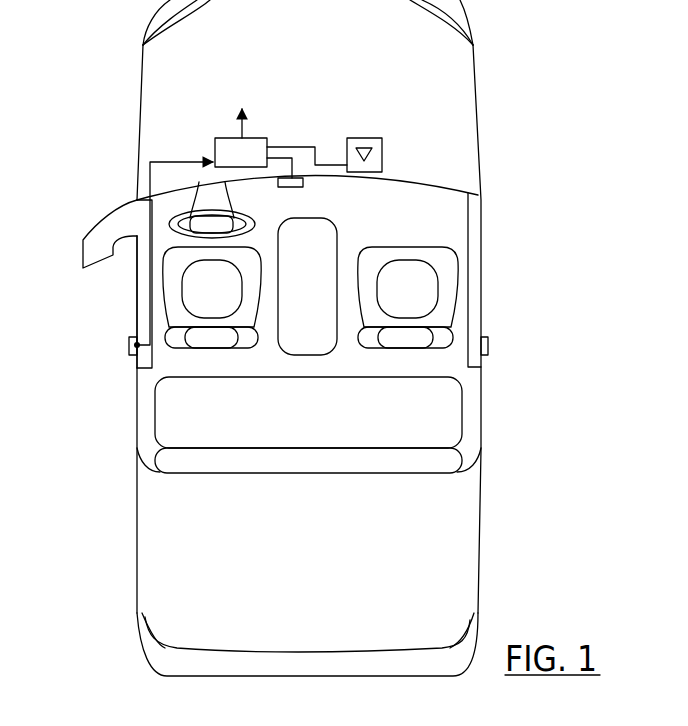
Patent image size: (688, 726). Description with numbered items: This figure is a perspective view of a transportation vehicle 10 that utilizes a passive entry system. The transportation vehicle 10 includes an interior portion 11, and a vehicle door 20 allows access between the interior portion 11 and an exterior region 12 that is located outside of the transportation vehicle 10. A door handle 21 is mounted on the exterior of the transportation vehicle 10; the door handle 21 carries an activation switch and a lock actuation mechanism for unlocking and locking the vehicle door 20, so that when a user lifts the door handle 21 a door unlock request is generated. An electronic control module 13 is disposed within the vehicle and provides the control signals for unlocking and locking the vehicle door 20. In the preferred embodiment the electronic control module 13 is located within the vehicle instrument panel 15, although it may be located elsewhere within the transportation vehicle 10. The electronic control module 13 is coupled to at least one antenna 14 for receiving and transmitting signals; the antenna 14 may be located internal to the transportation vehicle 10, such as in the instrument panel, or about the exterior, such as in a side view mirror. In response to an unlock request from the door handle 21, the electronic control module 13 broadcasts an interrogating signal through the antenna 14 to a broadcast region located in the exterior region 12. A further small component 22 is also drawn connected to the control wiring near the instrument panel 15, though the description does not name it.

The transportation vehicle 10 is at (477, 72).
The interior portion 11 is at (167, 357).
The exterior region 12 is at (60, 388).
The electronic control module 13 is at (220, 138).
The antenna 14 is at (382, 152).
The vehicle instrument panel 15 is at (453, 184).
The vehicle door 20 is at (142, 303).
The door handle 21 is at (129, 345).
The interior sensor 22 is at (300, 187).